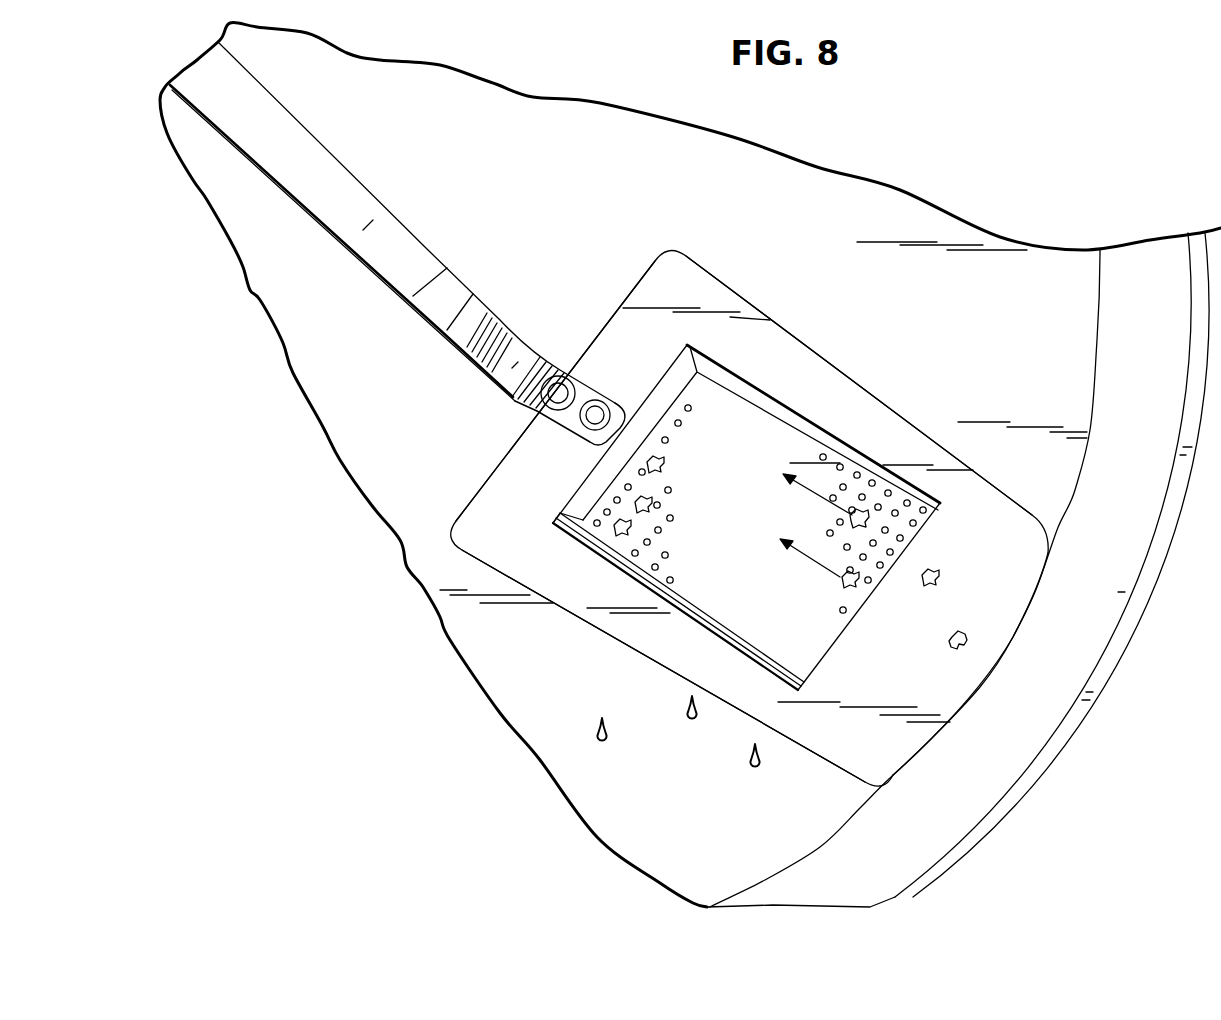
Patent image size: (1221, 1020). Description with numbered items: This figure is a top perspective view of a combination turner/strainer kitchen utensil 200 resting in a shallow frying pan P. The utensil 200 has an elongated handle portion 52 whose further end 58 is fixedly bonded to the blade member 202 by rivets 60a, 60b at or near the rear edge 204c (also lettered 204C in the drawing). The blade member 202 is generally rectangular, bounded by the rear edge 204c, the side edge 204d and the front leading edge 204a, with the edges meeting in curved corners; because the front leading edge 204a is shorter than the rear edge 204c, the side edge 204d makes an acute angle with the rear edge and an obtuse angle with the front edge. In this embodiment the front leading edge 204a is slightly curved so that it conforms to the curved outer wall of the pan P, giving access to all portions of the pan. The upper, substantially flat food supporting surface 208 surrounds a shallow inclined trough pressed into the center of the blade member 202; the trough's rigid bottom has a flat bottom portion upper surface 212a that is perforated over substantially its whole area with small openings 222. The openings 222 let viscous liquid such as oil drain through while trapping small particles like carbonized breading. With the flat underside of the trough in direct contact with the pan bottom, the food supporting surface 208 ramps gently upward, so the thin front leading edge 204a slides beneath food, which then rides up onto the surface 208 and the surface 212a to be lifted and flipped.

The handle portion 52 is at (340, 160).
The further end 58 is at (513, 332).
The rivet 60a is at (537, 411).
The rivet 60b is at (587, 422).
The combination turner/strainer kitchen utensil 200 is at (908, 372).
The blade member 202 is at (992, 484).
The front leading edge 204a is at (893, 773).
The rear edge 204c is at (610, 640).
The rear edge 204C is at (613, 314).
The side edge 204d is at (838, 367).
The food supporting surface 208 is at (735, 364).
The bottom portion upper surface 212a is at (752, 532).
The openings 222 is at (566, 530).
The pan P is at (1007, 817).